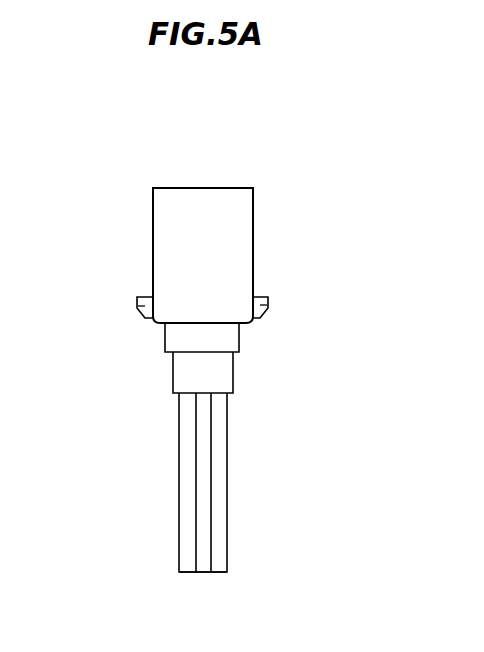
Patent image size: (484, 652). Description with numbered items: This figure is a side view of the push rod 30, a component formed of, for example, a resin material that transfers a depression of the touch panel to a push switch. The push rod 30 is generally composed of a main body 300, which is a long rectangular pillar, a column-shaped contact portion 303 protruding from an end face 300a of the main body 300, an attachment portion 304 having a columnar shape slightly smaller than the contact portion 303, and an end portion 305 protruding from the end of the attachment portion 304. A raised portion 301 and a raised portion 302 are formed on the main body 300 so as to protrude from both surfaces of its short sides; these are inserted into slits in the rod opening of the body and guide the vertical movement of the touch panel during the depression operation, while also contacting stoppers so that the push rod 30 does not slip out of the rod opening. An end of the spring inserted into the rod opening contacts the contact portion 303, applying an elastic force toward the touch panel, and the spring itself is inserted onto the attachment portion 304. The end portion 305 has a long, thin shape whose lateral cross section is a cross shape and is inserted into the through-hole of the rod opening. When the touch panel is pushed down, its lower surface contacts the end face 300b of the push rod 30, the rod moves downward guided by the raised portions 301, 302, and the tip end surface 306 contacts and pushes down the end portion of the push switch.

The push rod 30 is at (338, 133).
The main body 300 is at (243, 222).
The end face of the main body 300a is at (159, 326).
The end face of the push rod 300b is at (201, 188).
The raised portion 301 is at (260, 305).
The raised portion 302 is at (137, 306).
The contact portion 303 is at (177, 337).
The attachment portion 304 is at (215, 372).
The end portion 305 is at (218, 479).
The tip end surface 306 is at (203, 573).